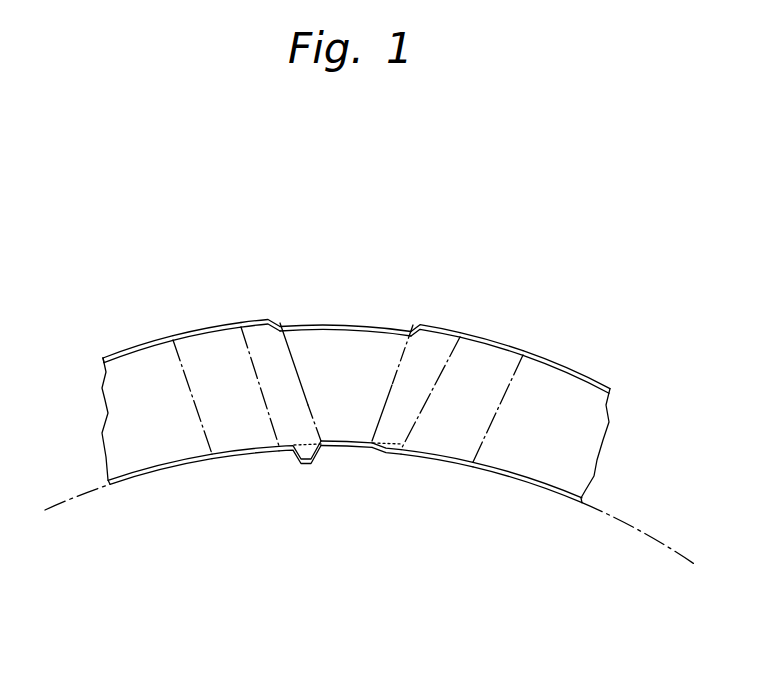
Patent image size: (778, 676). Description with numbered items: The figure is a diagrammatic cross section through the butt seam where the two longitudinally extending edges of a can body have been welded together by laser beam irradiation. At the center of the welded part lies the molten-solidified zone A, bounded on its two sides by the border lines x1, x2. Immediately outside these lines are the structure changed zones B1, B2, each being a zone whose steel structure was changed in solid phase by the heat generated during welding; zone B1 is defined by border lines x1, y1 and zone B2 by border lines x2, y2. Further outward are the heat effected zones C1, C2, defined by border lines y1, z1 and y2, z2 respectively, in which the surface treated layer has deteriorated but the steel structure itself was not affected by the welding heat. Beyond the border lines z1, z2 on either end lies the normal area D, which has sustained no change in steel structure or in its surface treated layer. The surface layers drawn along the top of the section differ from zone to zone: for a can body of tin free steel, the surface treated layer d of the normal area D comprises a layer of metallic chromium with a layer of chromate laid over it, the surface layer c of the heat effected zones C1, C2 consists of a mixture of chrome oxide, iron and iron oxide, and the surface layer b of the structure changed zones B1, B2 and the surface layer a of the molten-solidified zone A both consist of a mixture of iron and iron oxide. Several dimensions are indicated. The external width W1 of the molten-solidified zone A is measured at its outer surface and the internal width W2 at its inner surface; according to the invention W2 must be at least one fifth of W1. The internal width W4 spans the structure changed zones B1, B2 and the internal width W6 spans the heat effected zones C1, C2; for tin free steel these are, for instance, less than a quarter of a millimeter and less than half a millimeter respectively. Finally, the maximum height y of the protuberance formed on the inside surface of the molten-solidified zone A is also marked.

The surface layer of the molten-solidified zone a is at (343, 325).
The surface layer of the structure changed zone b is at (259, 320).
The surface layer of the heat effected zone c is at (207, 322).
The surface treated layer of normal area d is at (135, 338).
The molten-solidified zone A is at (346, 385).
The structure changed zone B1 is at (281, 395).
The structure changed zone B2 is at (398, 421).
The heat effected zone C1 is at (226, 399).
The heat effected zone C2 is at (462, 402).
The normal area D is at (371, 462).
The border line x1 is at (288, 347).
The border line x2 is at (398, 358).
The border line y1 is at (243, 341).
The border line y2 is at (456, 354).
The border line z1 is at (176, 345).
The border line z2 is at (517, 385).
The external width of the molten-solidified zone W1 is at (417, 325).
The internal width of the molten-solidified zone W2 is at (393, 537).
The internal width of the structure changed zone W4 is at (398, 575).
The internal width of the heat effected zone W6 is at (472, 607).
The maximum height of protuberance y is at (355, 350).